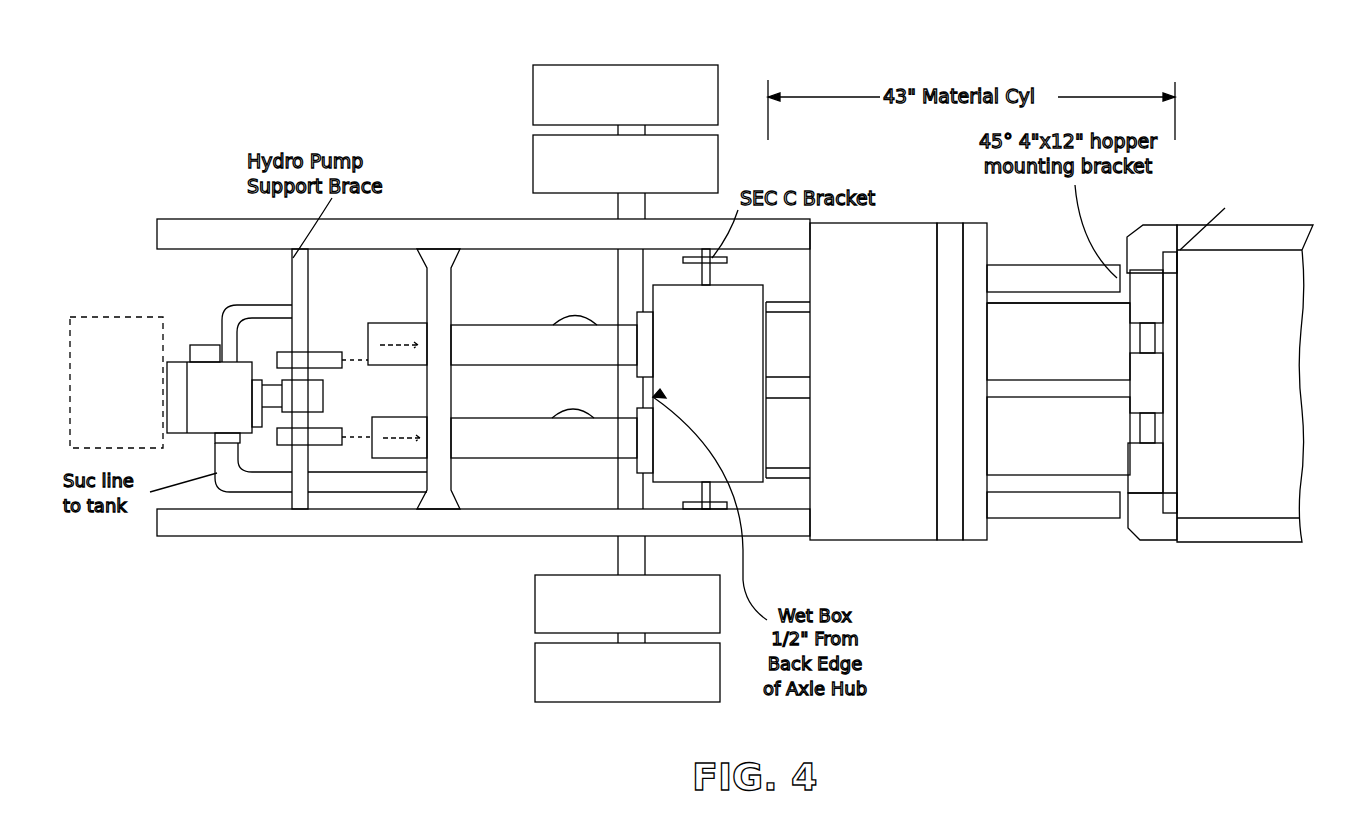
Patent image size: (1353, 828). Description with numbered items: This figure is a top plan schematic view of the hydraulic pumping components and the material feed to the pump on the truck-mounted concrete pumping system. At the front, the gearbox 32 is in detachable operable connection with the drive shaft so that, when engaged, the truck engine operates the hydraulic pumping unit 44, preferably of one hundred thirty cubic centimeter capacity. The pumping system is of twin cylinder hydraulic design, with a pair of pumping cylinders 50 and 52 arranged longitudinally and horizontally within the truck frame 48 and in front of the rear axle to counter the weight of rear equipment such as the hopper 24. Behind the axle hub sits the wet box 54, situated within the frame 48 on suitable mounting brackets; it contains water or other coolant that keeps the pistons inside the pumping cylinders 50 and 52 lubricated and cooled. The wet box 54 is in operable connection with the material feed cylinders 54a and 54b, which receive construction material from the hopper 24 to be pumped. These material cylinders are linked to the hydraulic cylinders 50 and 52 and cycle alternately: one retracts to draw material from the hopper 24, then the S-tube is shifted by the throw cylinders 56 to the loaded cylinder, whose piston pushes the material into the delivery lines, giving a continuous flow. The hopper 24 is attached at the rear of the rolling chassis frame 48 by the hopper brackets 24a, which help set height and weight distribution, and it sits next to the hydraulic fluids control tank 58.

The hopper 24 is at (1215, 545).
The hopper brackets 24a is at (1020, 262).
The gearbox 32 is at (118, 314).
The hydraulic pumping unit 44 is at (188, 362).
The truck frame 48 is at (628, 78).
The pumping cylinder 50 is at (477, 320).
The pumping cylinder 52 is at (525, 460).
The wet box 54 is at (787, 483).
The material feed cylinder 54a is at (1125, 288).
The material feed cylinder 54b is at (1075, 465).
The throw cylinders 56 is at (1273, 167).
The hydraulic fluids control tank 58 is at (888, 507).